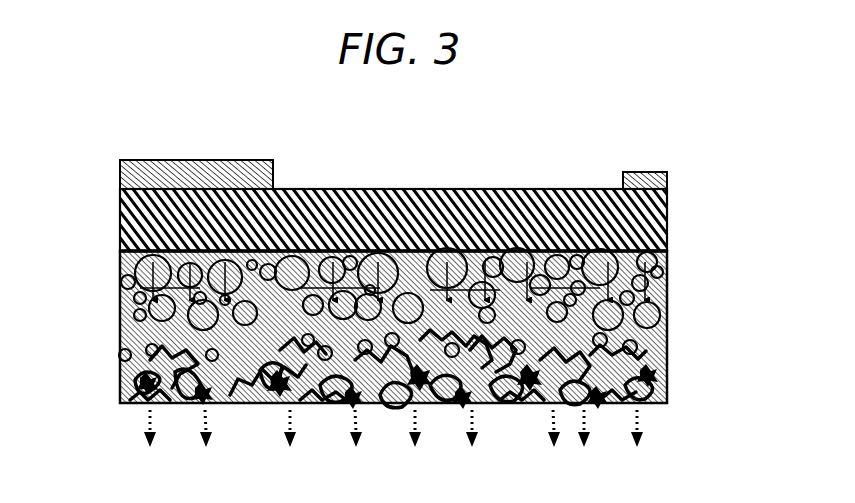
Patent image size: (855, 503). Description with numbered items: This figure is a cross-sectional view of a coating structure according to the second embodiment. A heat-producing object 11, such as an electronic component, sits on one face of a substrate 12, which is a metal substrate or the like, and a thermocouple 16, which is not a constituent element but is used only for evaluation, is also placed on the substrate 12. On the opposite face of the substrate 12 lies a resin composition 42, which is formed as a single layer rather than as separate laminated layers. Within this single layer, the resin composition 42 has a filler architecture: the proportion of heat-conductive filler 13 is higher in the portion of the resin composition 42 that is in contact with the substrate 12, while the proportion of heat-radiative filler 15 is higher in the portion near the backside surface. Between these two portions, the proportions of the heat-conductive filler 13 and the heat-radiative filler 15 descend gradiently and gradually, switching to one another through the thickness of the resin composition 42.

The heat-producing object 11 is at (243, 160).
The substrate 12 is at (373, 218).
The heat-conductive filler 13 is at (667, 242).
The heat-radiative filler 15 is at (667, 342).
The thermocouple 16 is at (650, 172).
The resin composition 42 is at (112, 265).